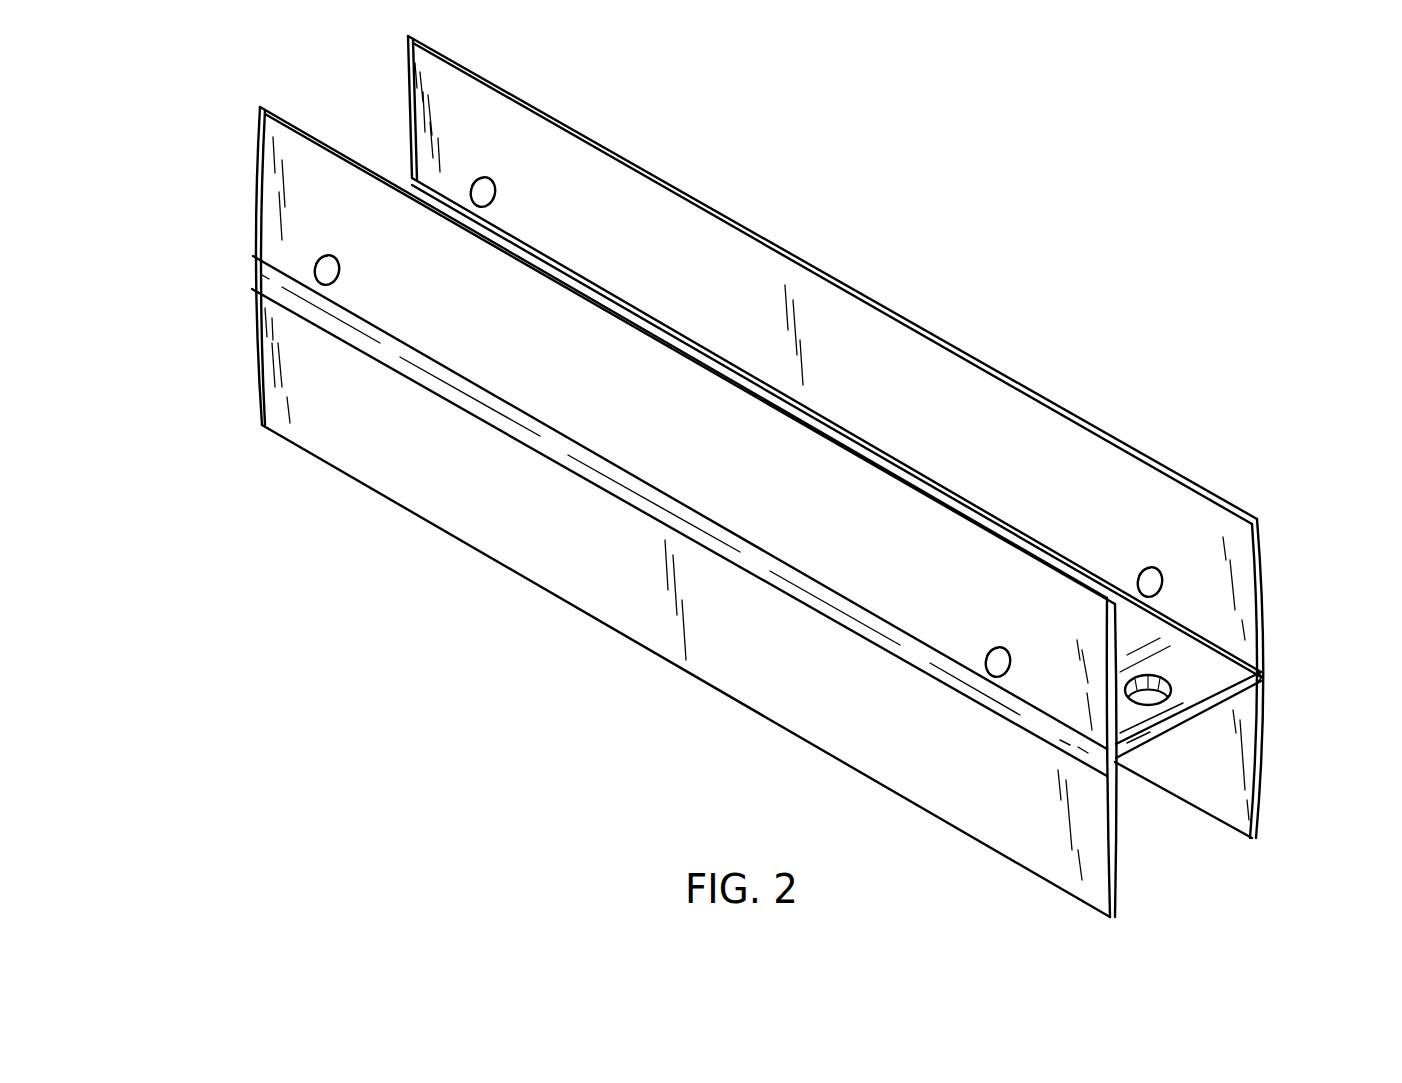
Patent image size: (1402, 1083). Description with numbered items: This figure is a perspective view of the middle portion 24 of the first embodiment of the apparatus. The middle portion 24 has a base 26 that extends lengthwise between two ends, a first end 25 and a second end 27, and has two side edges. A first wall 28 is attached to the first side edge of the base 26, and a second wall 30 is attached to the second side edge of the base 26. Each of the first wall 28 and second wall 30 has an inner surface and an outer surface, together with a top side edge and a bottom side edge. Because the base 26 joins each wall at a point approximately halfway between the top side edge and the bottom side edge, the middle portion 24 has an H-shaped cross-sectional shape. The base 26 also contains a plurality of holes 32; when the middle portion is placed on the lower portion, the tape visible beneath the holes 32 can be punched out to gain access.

The middle portion 24 is at (1267, 663).
The first end 25 is at (1262, 680).
The base 26 is at (1173, 733).
The second end 27 is at (253, 250).
The first wall 28 is at (977, 800).
The second wall 30 is at (1266, 750).
The holes 32 is at (1158, 673).